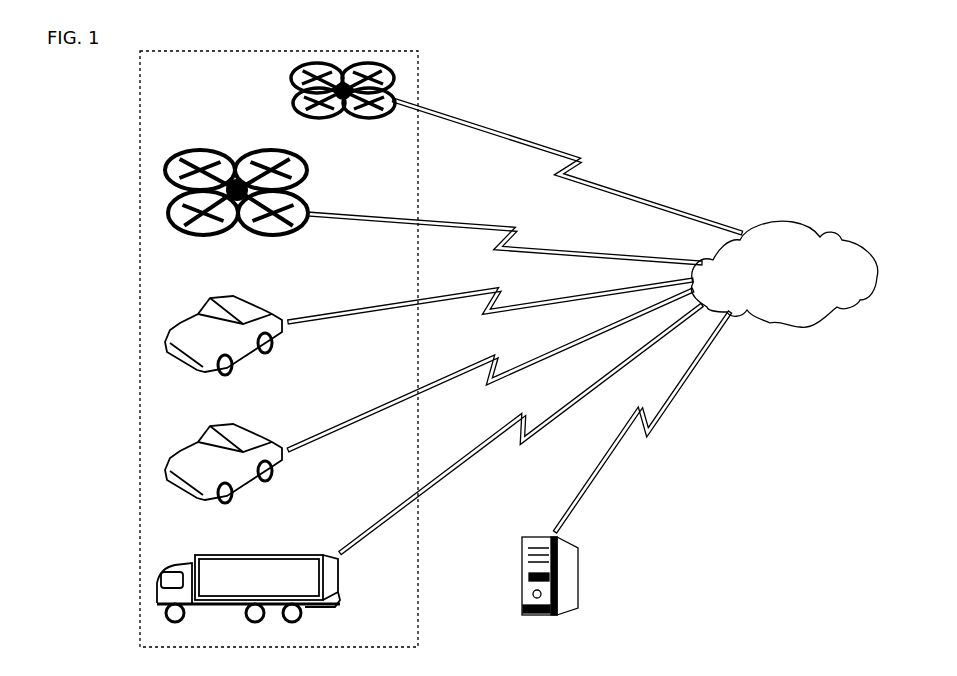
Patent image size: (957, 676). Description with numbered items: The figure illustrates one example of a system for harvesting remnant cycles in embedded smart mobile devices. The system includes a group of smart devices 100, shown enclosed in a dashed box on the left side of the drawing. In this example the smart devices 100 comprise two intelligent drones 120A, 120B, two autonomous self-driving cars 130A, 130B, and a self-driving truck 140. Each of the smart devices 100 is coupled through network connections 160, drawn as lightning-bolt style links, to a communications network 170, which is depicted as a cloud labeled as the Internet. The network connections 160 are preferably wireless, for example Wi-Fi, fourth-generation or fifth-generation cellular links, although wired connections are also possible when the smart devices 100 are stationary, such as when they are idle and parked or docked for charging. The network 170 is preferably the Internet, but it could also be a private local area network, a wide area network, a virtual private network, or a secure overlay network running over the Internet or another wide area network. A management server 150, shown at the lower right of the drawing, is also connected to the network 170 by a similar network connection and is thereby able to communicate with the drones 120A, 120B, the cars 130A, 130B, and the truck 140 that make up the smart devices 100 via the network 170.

The smart devices 100 is at (140, 108).
The intelligent drone 120A is at (333, 118).
The intelligent drone 120B is at (208, 238).
The self-driving car 130A is at (243, 353).
The self-driving car 130B is at (250, 482).
The self-driving truck 140 is at (342, 584).
The management server 150 is at (575, 572).
The network connections 160 is at (563, 140).
The communications network 170 is at (797, 325).